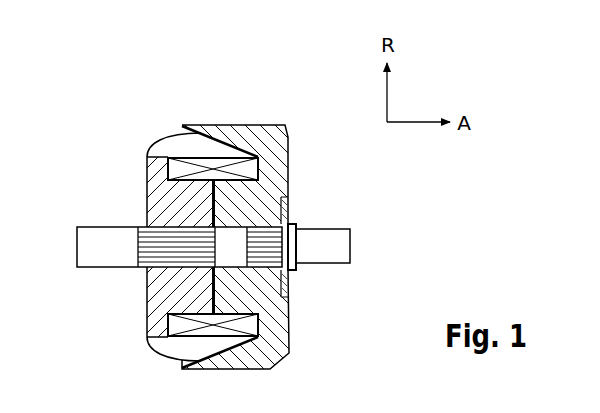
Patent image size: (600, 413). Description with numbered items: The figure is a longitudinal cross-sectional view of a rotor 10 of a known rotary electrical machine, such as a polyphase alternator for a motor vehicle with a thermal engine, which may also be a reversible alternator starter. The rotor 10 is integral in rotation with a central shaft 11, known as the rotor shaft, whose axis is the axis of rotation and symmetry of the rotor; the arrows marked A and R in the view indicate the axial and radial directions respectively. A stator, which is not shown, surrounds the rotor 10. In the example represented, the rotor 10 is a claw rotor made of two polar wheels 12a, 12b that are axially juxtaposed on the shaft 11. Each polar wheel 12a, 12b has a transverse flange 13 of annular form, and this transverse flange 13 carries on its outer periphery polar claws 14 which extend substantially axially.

The rotor 10 is at (140, 295).
The central shaft 11 is at (320, 250).
The polar wheel 12a is at (145, 210).
The polar wheel 12b is at (292, 168).
The transverse flange 13 is at (150, 193).
The polar claws 14 is at (280, 127).